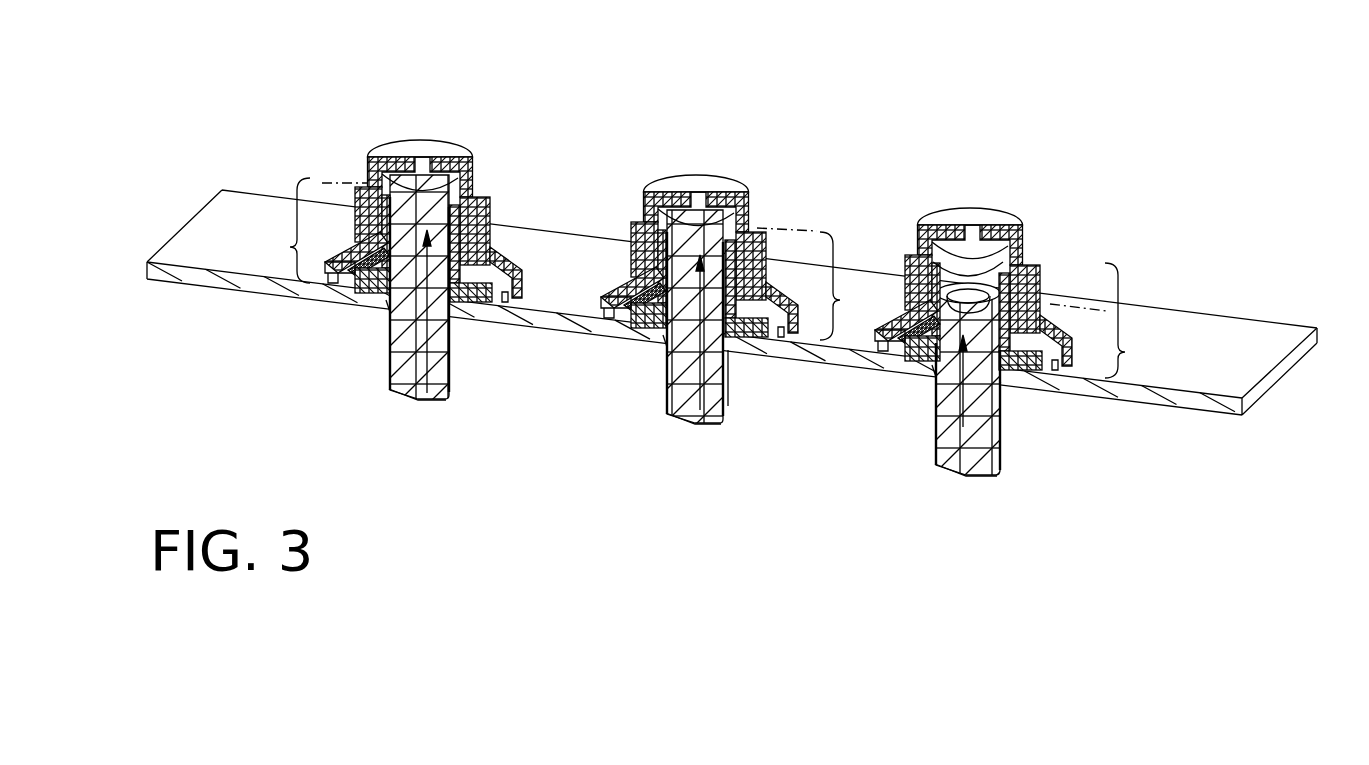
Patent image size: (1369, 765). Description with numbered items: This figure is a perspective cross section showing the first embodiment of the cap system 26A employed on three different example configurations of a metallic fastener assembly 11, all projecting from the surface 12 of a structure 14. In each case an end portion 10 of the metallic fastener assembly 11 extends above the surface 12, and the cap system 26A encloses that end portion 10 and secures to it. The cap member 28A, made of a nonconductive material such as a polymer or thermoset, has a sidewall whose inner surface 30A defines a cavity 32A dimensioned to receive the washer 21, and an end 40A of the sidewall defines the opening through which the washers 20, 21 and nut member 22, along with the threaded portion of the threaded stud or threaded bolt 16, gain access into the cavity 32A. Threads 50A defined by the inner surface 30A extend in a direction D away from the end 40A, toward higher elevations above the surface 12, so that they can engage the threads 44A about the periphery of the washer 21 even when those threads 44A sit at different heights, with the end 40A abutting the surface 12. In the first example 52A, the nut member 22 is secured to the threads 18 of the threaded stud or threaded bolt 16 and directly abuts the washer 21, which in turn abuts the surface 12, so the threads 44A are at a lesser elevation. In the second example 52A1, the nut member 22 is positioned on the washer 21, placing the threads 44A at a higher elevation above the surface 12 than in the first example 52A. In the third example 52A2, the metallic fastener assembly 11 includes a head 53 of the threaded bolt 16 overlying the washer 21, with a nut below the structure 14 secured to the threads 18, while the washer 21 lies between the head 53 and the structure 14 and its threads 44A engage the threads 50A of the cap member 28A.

The end portion 10 is at (290, 247).
The metallic fastener assembly 11 is at (386, 399).
The surface 12 is at (1227, 332).
The structure 14 is at (1270, 377).
The threaded stud or threaded bolt 16 is at (438, 387).
The threads 18 is at (457, 364).
The washer 20 is at (728, 390).
The washer 21 is at (497, 262).
The nut member 22 is at (473, 203).
The cap system 26A is at (738, 199).
The cap member 28A is at (452, 155).
The inner surface 30A is at (385, 168).
The cavity 32A is at (446, 166).
The end 40A is at (507, 305).
The threads 44A is at (355, 300).
The threads 50A is at (378, 240).
The first example 52A is at (384, 308).
The second example 52A1 is at (658, 346).
The third example 52A2 is at (934, 376).
The head 53 is at (1010, 280).
The direction D is at (425, 345).